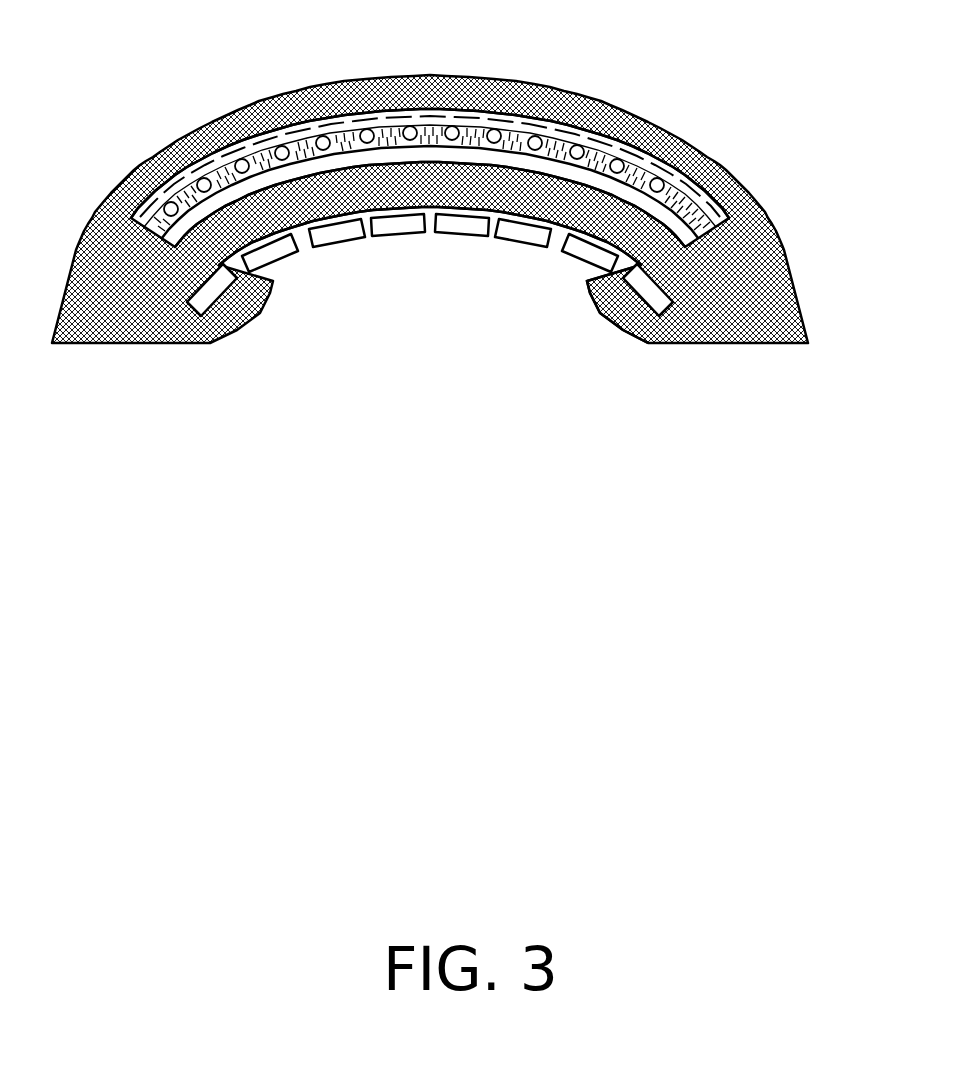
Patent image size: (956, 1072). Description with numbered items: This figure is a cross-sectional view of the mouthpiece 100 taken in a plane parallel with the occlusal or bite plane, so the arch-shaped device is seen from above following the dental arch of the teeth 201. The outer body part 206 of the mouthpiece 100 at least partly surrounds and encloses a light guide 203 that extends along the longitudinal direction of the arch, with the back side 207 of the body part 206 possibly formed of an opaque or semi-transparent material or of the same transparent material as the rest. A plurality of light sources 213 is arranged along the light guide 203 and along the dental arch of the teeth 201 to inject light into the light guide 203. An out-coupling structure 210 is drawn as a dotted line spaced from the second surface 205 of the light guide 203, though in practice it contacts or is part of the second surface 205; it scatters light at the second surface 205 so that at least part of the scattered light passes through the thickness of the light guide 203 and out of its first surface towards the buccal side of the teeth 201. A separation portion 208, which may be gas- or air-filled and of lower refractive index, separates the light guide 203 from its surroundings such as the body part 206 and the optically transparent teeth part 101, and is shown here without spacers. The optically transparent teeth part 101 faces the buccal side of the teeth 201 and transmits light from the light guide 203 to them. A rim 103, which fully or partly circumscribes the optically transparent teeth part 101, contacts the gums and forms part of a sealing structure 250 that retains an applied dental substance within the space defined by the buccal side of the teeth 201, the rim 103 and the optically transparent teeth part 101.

The mouthpiece 100 is at (148, 103).
The optically transparent teeth part 101 is at (313, 195).
The rim 103 is at (586, 290).
The teeth 201 is at (463, 237).
The light guide 203 is at (263, 150).
The second surface 205 is at (491, 128).
The body part 206 is at (753, 260).
The back side 207 is at (658, 128).
The separation portion 208 is at (386, 160).
The out-coupling structure 210 is at (406, 112).
The light sources 213 is at (533, 138).
The sealing structure 250 is at (612, 303).